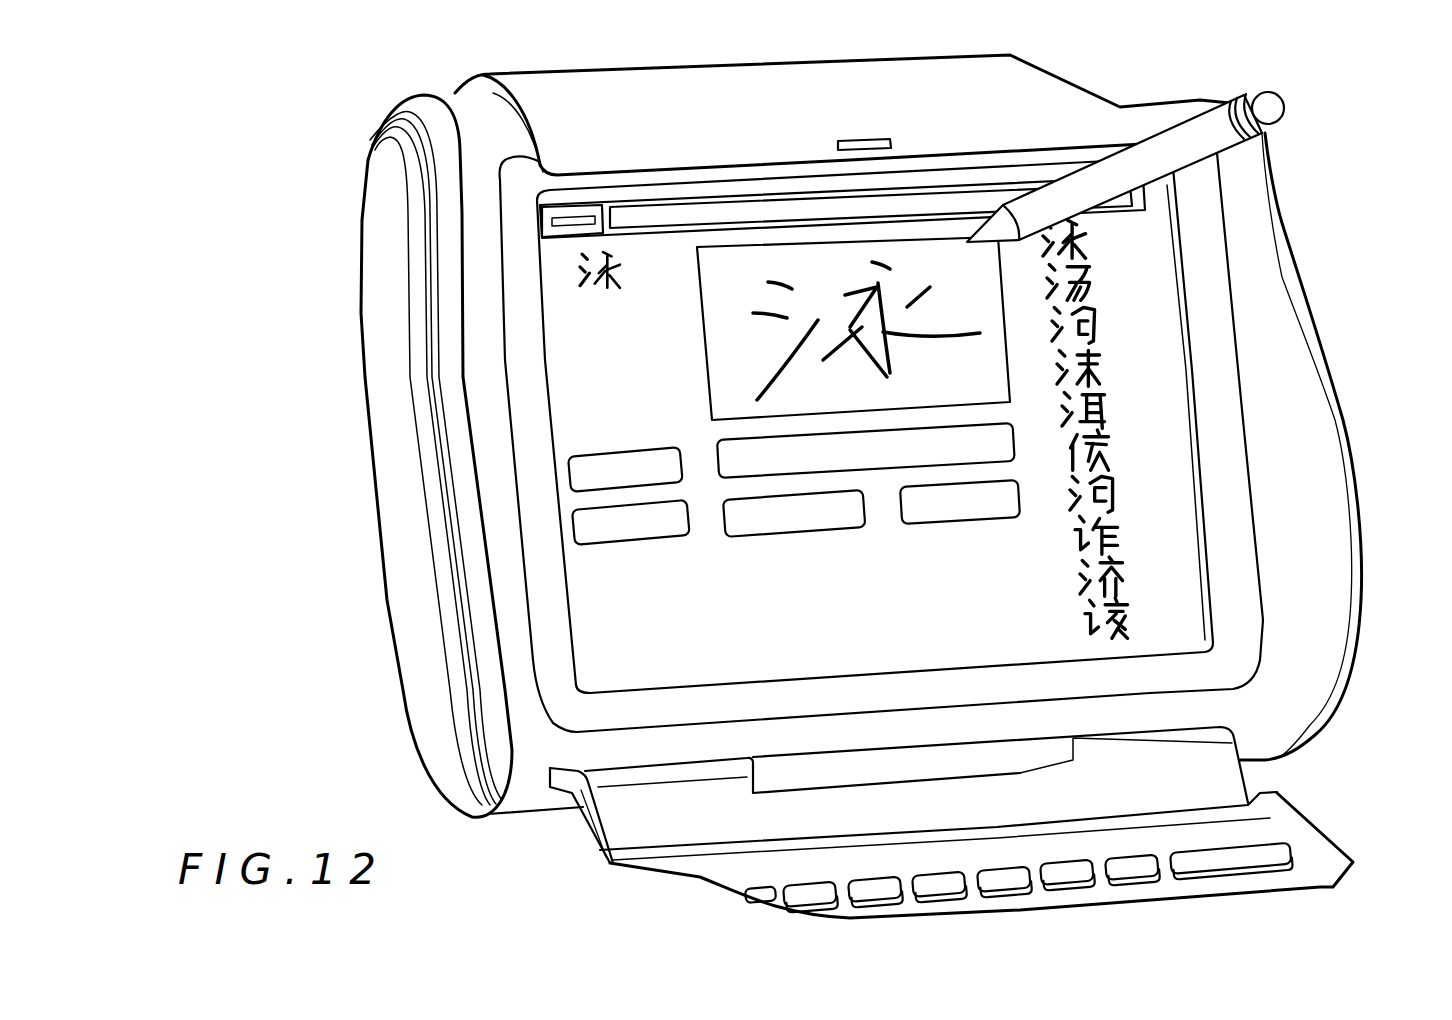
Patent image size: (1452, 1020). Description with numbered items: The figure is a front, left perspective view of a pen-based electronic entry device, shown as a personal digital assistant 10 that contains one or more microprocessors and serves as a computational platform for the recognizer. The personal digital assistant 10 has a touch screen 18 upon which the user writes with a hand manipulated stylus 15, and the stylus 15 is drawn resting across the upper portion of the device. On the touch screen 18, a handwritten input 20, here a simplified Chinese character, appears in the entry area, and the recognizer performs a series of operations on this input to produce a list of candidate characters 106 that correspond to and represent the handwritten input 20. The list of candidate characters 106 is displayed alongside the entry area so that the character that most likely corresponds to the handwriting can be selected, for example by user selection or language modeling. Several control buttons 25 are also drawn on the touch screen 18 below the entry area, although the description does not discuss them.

The personal digital assistant 10 is at (573, 317).
The stylus 15 is at (1265, 108).
The touch screen 18 is at (707, 380).
The handwritten input 20 is at (740, 293).
The function buttons 25 is at (610, 517).
The list of candidate characters 106 is at (1167, 232).